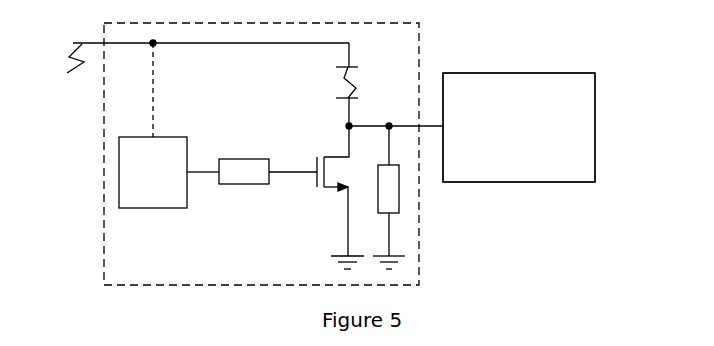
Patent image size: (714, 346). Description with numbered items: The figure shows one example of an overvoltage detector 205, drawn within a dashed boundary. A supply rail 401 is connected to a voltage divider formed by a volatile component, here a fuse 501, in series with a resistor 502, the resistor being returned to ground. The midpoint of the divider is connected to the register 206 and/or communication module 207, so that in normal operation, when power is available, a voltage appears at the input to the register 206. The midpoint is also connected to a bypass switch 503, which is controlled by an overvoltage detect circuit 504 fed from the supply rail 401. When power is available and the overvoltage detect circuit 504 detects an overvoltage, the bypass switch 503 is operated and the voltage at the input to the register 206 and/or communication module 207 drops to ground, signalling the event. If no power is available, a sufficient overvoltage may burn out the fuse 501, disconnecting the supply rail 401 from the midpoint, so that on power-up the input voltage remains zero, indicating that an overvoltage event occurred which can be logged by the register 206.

The overvoltage detector 205 is at (169, 265).
The register 206 is at (535, 121).
The communication module 207 is at (530, 148).
The supply rail 401 is at (194, 70).
The fuse 501 is at (304, 84).
The resistor 502 is at (436, 197).
The bypass switch 503 is at (305, 191).
The overvoltage detect circuit 504 is at (153, 172).